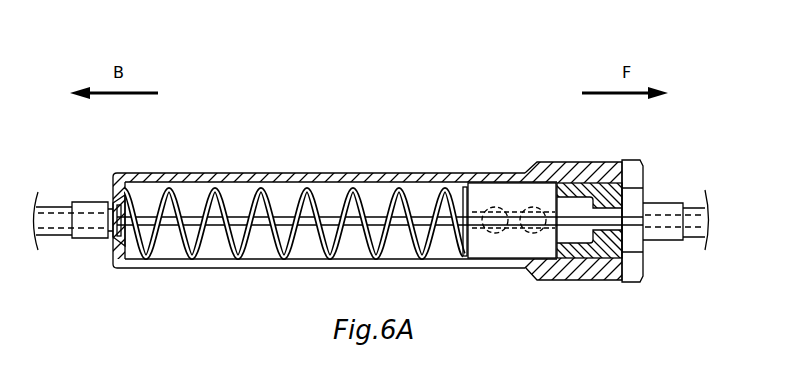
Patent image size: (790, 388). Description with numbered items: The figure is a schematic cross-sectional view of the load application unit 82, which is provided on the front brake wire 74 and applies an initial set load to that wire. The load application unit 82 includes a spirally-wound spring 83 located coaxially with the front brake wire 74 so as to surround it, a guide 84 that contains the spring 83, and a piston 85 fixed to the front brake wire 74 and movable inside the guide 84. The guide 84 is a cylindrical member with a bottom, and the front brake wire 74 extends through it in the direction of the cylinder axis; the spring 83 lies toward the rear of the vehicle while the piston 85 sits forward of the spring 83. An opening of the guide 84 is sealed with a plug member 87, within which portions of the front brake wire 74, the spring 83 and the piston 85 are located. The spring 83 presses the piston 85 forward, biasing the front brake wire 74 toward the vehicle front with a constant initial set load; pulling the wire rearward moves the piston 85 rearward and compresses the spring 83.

The load application unit 82 is at (422, 97).
The guide 84 is at (177, 175).
The spirally-wound spring 83 is at (303, 190).
The front brake wire 74 is at (378, 218).
The piston 85 is at (492, 192).
The plug member 87 is at (622, 256).